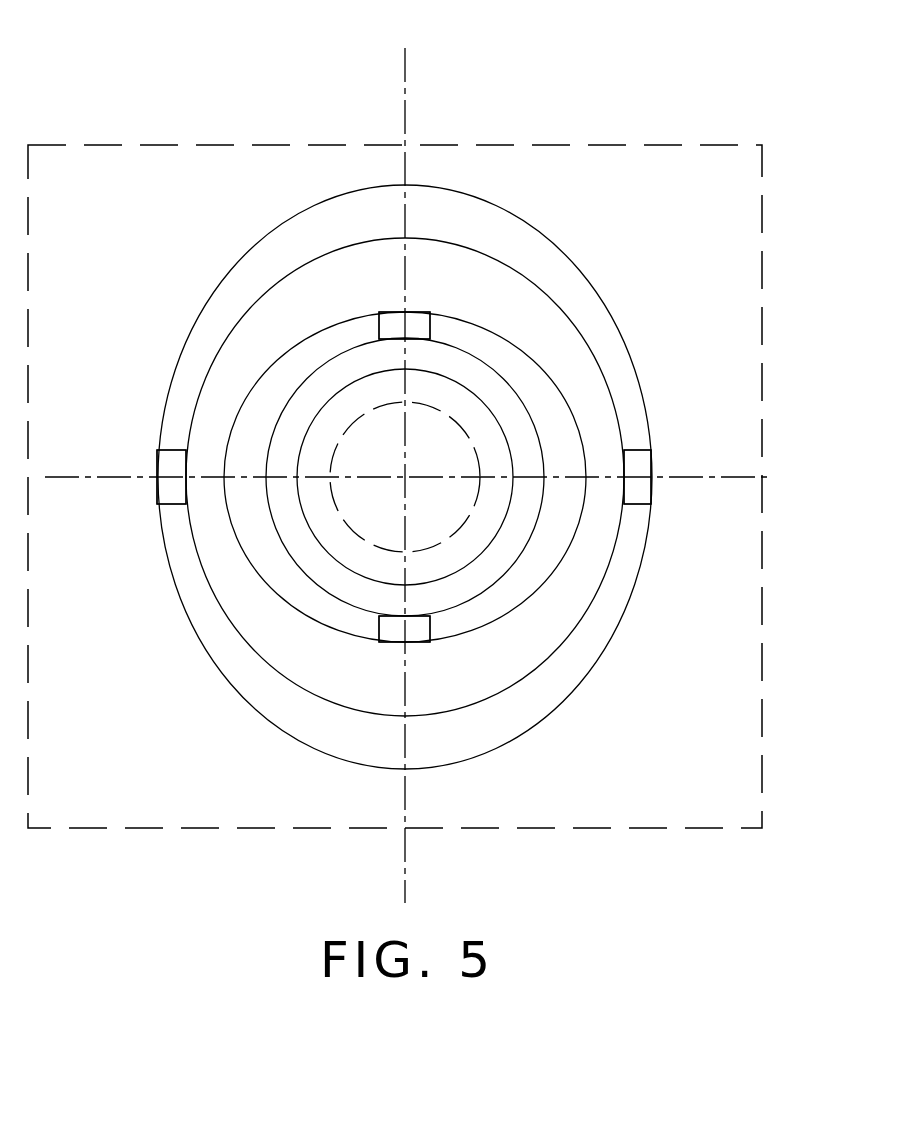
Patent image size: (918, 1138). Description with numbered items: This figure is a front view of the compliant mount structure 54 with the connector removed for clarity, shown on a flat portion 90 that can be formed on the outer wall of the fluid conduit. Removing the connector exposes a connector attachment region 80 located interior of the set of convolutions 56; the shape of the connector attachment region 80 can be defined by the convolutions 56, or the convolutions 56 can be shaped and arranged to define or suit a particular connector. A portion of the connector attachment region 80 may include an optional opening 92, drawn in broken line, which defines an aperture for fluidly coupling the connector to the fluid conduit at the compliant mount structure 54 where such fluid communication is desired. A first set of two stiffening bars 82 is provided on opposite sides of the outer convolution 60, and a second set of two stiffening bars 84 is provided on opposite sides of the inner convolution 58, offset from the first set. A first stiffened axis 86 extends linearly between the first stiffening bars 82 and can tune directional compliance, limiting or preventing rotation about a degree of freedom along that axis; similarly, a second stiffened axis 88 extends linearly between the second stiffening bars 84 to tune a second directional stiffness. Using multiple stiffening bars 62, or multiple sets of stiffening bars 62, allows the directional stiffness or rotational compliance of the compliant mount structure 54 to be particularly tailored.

The compliant mount structure 54 is at (92, 275).
The set of convolutions 56 is at (322, 239).
The inner convolution 58 is at (510, 617).
The outer convolution 60 is at (583, 272).
The stiffening bars 62 is at (390, 332).
The connector attachment region 80 is at (333, 542).
The first set of stiffening bars 82 is at (172, 493).
The second set of stiffening bars 84 is at (413, 317).
The first stiffened axis 86 is at (722, 477).
The second stiffened axis 88 is at (403, 873).
The flat portion 90 is at (523, 143).
The opening 92 is at (453, 418).